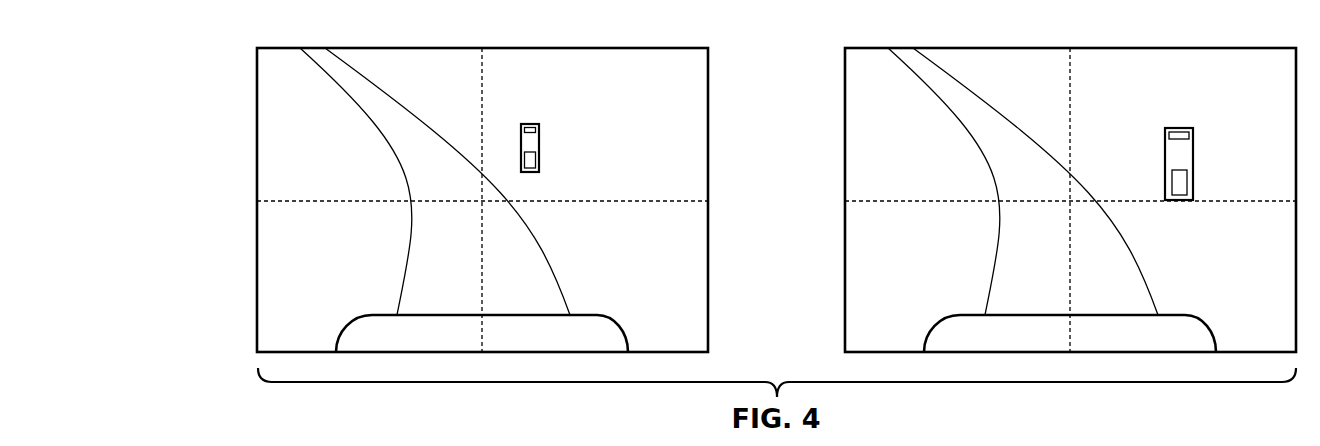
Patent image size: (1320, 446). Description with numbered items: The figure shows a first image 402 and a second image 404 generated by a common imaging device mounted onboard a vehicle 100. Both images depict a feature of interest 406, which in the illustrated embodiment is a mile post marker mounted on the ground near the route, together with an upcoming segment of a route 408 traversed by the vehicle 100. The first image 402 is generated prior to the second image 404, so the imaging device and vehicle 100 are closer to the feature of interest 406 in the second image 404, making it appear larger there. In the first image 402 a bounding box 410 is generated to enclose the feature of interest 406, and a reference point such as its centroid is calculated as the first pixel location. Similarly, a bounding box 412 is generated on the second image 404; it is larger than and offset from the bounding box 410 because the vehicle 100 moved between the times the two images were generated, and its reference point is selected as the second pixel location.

The first image 402 is at (282, 47).
The second image 404 is at (870, 47).
The feature of interest 406 is at (522, 148).
The route 408 is at (391, 136).
The bounding box 410 is at (539, 142).
The bounding box 412 is at (1193, 160).
The vehicle 100 is at (363, 333).